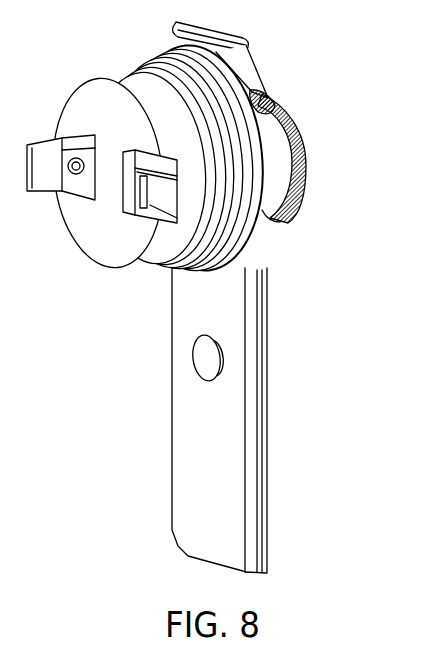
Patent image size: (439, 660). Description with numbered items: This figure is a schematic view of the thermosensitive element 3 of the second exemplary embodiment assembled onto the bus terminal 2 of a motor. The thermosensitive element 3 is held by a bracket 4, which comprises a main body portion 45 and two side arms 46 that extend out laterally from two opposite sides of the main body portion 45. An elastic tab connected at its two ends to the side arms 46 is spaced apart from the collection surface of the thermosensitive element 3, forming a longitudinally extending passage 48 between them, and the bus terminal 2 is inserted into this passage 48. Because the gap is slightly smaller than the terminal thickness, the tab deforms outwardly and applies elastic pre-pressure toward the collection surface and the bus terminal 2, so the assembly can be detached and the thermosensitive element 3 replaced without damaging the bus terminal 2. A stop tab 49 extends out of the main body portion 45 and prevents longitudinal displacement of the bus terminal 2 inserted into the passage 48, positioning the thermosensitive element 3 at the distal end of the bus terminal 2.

The bus terminal 2 is at (182, 332).
The thermosensitive element 3 is at (115, 240).
The bracket 4 is at (250, 240).
The main body portion 45 is at (256, 200).
The side arms 46 is at (282, 163).
The longitudinally extending passage 48 is at (264, 97).
The stop tab 49 is at (230, 34).